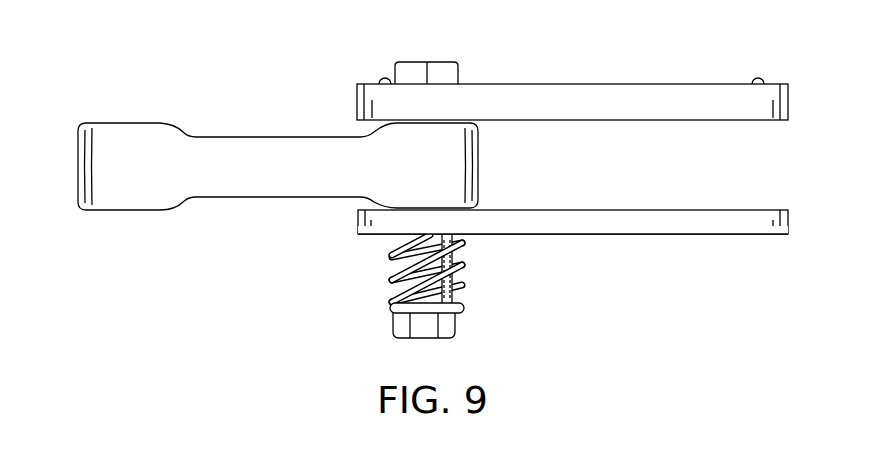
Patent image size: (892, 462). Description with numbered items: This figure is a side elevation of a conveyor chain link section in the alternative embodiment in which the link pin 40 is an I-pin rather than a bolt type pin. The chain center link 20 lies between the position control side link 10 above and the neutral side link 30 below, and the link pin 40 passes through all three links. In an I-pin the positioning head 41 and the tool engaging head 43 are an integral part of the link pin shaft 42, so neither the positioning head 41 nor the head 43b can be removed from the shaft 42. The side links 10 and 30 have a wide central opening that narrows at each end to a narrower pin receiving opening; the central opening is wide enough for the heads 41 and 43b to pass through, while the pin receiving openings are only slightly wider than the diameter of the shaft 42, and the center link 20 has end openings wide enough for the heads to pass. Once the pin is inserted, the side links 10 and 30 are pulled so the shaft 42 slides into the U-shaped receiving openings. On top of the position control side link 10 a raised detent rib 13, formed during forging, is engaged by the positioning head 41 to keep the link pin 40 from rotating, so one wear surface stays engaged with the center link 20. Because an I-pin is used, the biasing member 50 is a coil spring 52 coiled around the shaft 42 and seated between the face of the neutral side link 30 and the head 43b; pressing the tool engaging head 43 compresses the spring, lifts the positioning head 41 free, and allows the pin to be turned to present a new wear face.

The position control side link 10 is at (626, 79).
The raised detent rib 13 is at (384, 78).
The chain center link 20 is at (255, 130).
The neutral side link 30 is at (684, 202).
The link pin 40 is at (463, 69).
The positioning head 41 is at (420, 70).
The link pin shaft 42 is at (431, 260).
The tool engaging head 43 is at (387, 325).
The head of I-pin 43b is at (449, 321).
The biasing member 50 is at (562, 269).
The coil spring 52 is at (456, 291).